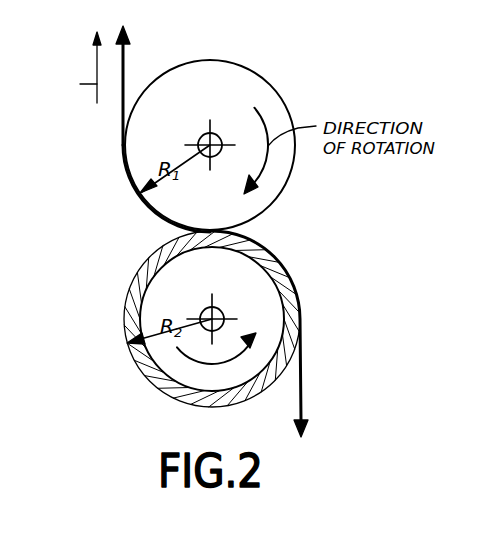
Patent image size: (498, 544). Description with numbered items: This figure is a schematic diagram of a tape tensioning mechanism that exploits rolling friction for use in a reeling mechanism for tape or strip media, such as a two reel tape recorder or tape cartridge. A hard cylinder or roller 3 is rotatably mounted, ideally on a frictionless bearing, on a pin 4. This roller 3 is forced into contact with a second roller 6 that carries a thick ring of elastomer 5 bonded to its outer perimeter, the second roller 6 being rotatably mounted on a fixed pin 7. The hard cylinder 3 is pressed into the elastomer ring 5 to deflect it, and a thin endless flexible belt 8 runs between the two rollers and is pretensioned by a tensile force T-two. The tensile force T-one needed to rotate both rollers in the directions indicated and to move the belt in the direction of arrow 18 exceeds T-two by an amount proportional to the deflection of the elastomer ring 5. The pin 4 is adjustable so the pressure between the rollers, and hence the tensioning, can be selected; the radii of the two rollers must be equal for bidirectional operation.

The hard cylinder 3 is at (240, 85).
The pin 4 is at (210, 134).
The elastomer ring 5 is at (155, 372).
The second roller 6 is at (168, 282).
The fixed pin 7 is at (214, 317).
The endless flexible belt 8 is at (303, 386).
The arrow 18 is at (82, 84).